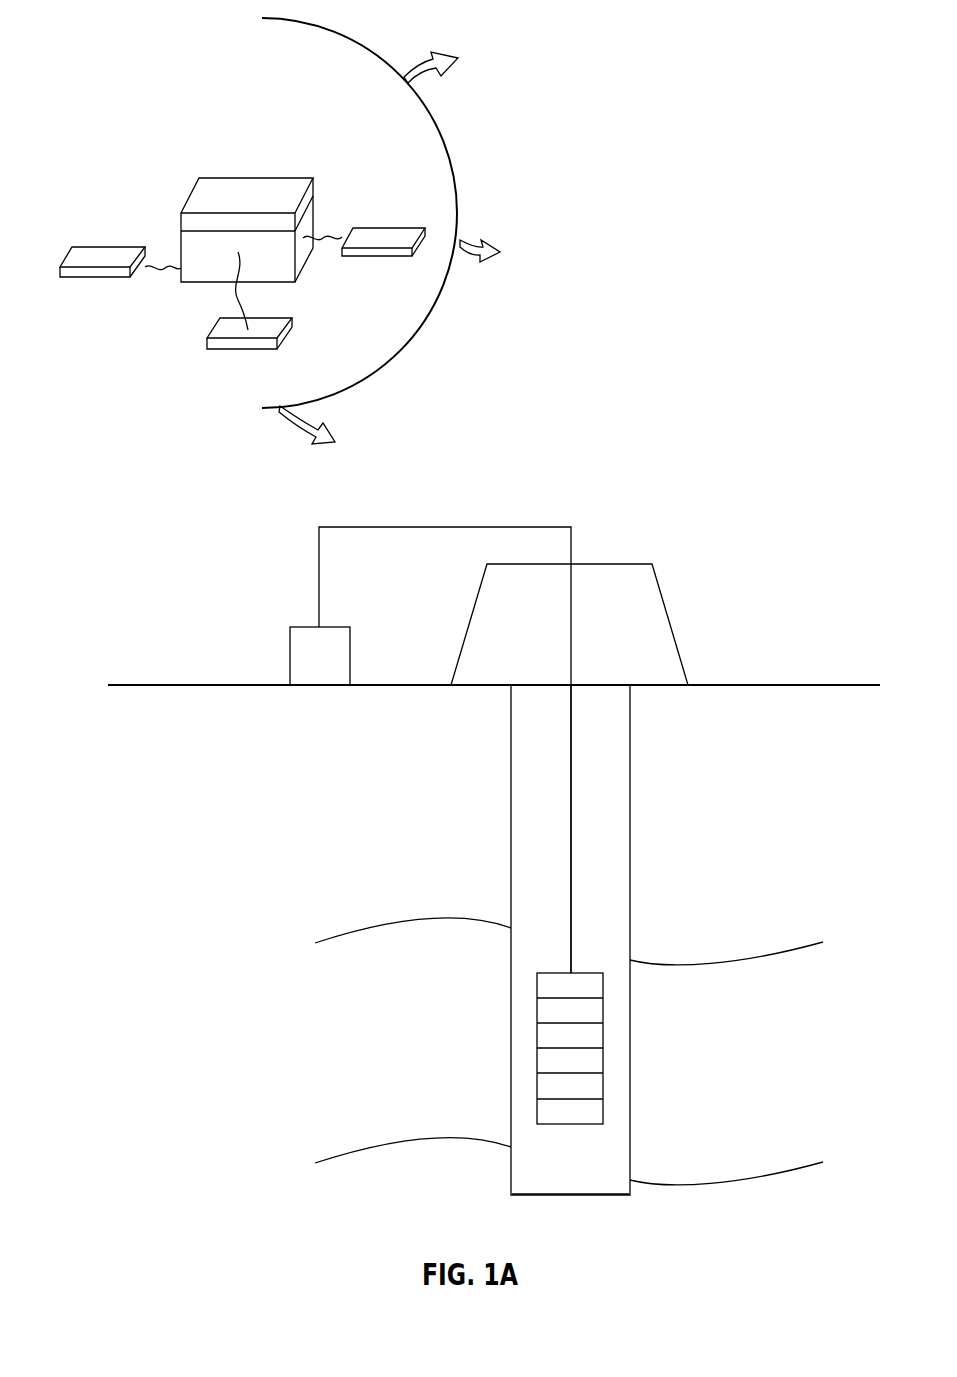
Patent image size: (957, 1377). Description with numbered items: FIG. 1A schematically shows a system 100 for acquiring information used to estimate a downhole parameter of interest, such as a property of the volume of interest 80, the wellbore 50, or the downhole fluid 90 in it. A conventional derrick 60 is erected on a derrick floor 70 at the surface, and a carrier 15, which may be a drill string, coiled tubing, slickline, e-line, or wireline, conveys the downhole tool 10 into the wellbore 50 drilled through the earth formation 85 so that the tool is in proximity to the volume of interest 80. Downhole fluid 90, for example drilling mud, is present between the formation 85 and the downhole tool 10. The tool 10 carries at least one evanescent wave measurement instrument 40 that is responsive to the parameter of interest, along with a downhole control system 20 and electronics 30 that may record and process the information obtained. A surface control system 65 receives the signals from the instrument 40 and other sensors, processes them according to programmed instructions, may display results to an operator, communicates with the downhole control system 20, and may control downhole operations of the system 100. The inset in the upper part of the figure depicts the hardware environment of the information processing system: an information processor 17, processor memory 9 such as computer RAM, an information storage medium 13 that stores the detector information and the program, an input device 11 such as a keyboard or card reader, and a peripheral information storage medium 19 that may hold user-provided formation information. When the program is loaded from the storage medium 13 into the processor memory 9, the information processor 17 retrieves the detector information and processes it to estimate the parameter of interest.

The processor memory 9 is at (270, 205).
The information processor 17 is at (247, 195).
The input device 11 is at (383, 238).
The peripheral information storage medium 19 is at (103, 255).
The information storage medium 13 is at (207, 347).
The system 100 is at (494, 850).
The earth formation 85 is at (569, 961).
The volume of interest 80 is at (776, 1065).
The wellbore 50 is at (631, 865).
The carrier 15 is at (573, 822).
The downhole tool 10 is at (569, 1046).
The downhole control system 20 is at (537, 1010).
The electronics 30 is at (537, 1060).
The evanescent wave measurement instrument 40 is at (604, 1087).
The derrick 60 is at (673, 623).
The surface control system 65 is at (330, 627).
The derrick floor 70 is at (485, 679).
The downhole fluid 90 is at (614, 1149).